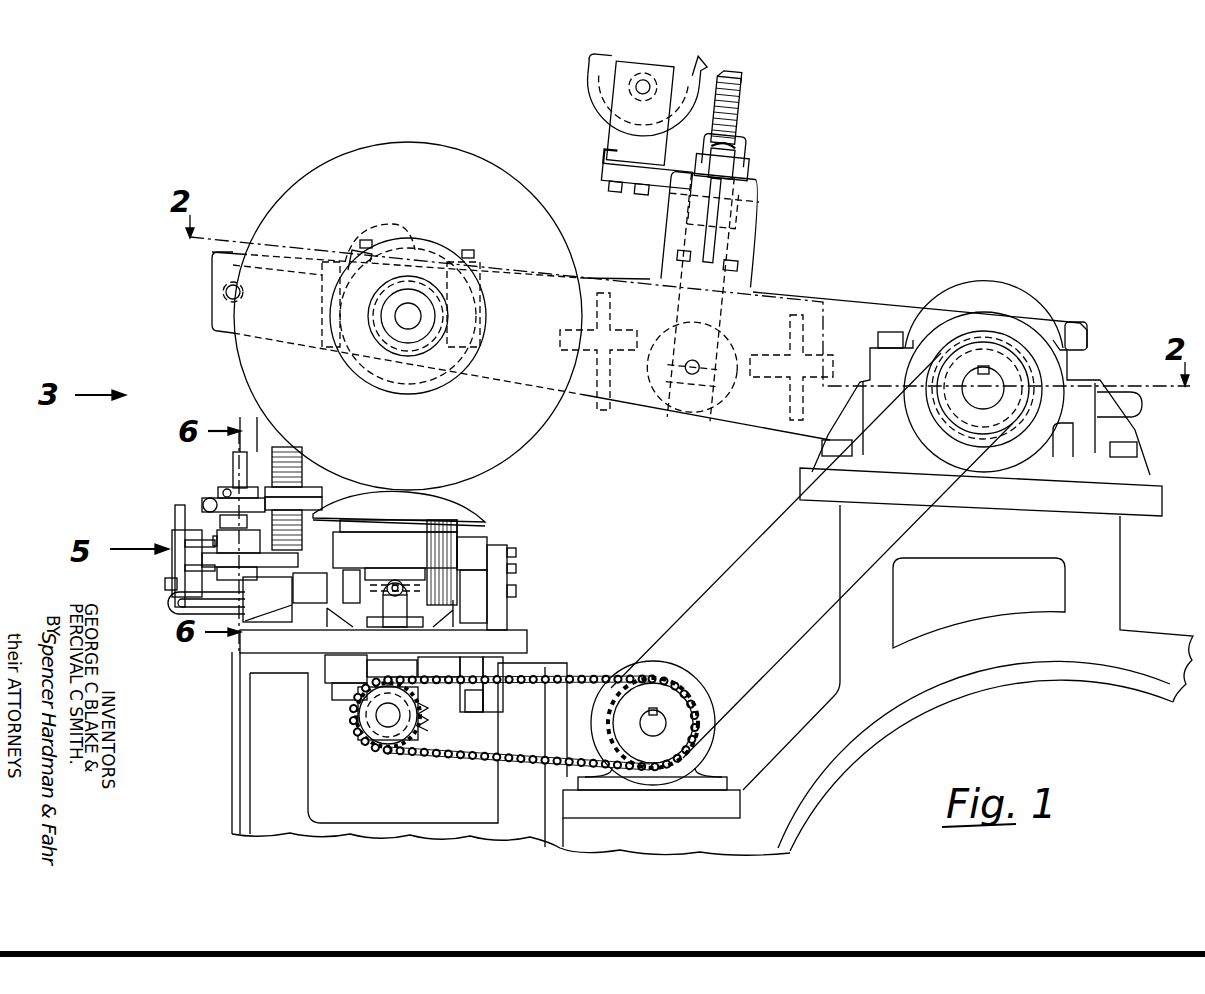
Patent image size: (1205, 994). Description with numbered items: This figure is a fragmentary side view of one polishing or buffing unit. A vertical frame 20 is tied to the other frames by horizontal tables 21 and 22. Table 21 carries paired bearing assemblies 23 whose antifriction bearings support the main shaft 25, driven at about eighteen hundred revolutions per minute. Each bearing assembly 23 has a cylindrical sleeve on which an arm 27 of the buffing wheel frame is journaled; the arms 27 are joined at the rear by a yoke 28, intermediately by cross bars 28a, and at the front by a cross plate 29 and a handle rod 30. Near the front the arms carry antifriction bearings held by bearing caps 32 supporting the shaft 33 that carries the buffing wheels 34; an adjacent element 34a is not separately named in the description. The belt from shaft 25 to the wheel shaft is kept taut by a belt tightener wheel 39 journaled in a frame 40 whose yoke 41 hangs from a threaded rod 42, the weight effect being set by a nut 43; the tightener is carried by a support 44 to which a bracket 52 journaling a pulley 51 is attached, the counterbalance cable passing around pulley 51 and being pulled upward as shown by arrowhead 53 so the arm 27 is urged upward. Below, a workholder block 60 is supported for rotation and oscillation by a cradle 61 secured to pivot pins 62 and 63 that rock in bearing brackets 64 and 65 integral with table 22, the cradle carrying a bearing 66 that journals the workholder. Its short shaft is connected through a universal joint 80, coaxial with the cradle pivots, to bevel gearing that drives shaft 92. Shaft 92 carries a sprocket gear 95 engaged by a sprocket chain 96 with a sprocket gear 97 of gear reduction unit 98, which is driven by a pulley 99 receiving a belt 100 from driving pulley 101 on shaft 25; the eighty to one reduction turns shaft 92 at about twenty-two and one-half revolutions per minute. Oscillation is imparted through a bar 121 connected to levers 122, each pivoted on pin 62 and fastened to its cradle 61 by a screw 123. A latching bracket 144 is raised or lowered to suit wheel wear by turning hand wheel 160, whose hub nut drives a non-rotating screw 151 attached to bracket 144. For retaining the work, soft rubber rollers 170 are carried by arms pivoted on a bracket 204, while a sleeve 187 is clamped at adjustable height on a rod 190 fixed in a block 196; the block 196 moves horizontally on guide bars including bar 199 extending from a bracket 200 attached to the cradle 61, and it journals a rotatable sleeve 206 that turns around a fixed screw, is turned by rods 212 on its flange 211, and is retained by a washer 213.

The vertical frame 20 is at (932, 702).
The table 21 is at (800, 486).
The table 22 is at (528, 638).
The bearing assembly 23 is at (870, 390).
The shaft 25 is at (977, 400).
The arm 27 is at (212, 312).
The yoke 28 is at (1143, 410).
The cross bars 28a is at (606, 402).
The cross plate 29 is at (315, 330).
The rod 30 is at (224, 290).
The bearing cap 32 is at (350, 222).
The shaft 33 is at (408, 331).
The buffing wheel 34 is at (306, 182).
The wheel hub flange 34a is at (410, 390).
The belt tightener wheel 39 is at (738, 352).
The frame 40 is at (714, 308).
The yoke 41 is at (754, 198).
The threaded stem or rod 42 is at (744, 102).
The nut 43 is at (750, 150).
The support 44 is at (754, 226).
The pulley 51 is at (596, 90).
The bracket 52 is at (606, 135).
The arrowhead 53 is at (736, 68).
The workholder block 60 is at (470, 535).
The cradle 61 is at (500, 548).
The pivot pin 62 is at (518, 591).
The pivot pin 63 is at (290, 625).
The bearing bracket 64 is at (462, 625).
The bearing bracket 65 is at (330, 622).
The bearing 66 is at (360, 490).
The universal joint 80 is at (392, 612).
The shaft 92 is at (398, 716).
The sprocket gear 95 is at (352, 742).
The sprocket chain 96 is at (432, 752).
The sprocket gear 97 is at (690, 705).
The gear reduction unit 98 is at (645, 662).
The pulley 99 is at (652, 780).
The belt 100 is at (762, 540).
The driving pulley 101 is at (990, 345).
The bar 121 is at (474, 712).
The lever 122 is at (518, 568).
The screw 123 is at (518, 552).
The bracket 144 is at (250, 418).
The screw 151 is at (305, 460).
The hand wheel 160 is at (168, 606).
The soft rubber roller 170 is at (328, 497).
The sleeve 187 is at (224, 487).
The rod 190 is at (232, 458).
The block 196 is at (224, 530).
The horizontal guide bar 199 is at (270, 567).
The bracket 200 is at (338, 560).
The bracket 204 is at (212, 498).
The rotatable sleeve 206 is at (165, 585).
The flange 211 is at (172, 535).
The rods 212 is at (175, 512).
The washer 213 is at (182, 570).